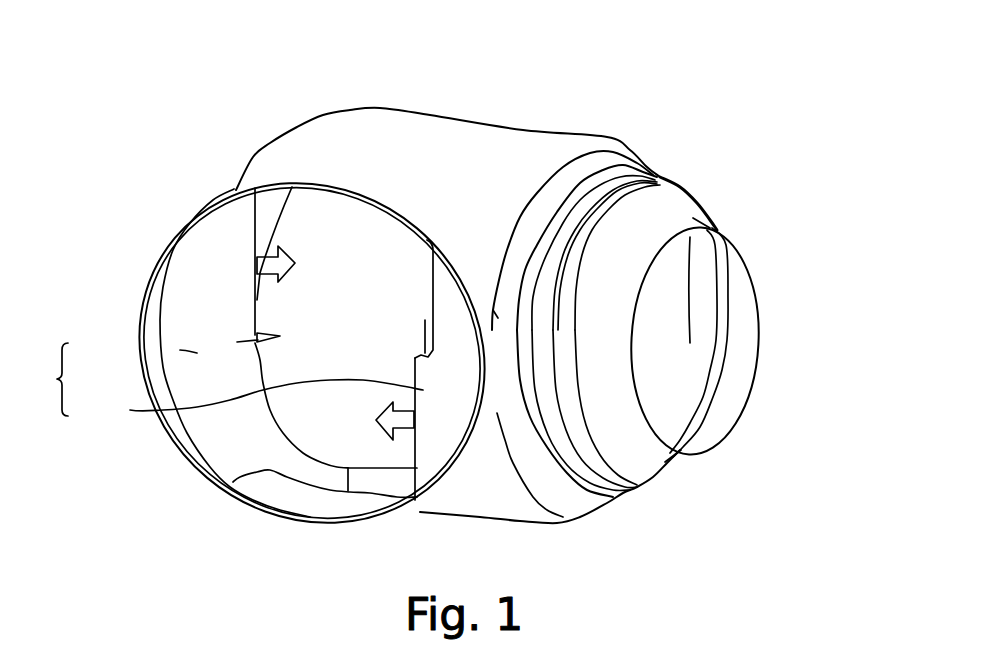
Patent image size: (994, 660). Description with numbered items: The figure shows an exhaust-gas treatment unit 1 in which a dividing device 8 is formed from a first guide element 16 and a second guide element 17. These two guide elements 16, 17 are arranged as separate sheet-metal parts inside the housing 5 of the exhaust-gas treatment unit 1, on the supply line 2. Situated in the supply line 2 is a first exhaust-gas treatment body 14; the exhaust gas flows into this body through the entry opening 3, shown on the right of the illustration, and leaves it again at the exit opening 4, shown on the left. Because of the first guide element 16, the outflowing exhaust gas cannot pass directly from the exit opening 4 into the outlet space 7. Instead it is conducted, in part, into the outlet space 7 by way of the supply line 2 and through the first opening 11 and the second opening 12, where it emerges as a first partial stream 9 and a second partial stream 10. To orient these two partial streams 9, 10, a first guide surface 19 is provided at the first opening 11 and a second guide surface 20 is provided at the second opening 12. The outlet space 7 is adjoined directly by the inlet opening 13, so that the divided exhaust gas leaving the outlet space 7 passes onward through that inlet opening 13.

The exhaust-gas treatment unit 1 is at (608, 120).
The supply line 2 is at (333, 230).
The entry opening 3 is at (758, 300).
The exit opening 4 is at (290, 222).
The housing 5 is at (533, 137).
The outlet space 7 is at (330, 480).
The dividing device 8 is at (57, 379).
The first partial stream 9 is at (273, 266).
The second partial stream 10 is at (420, 420).
The first opening 11 is at (263, 225).
The second opening 12 is at (417, 435).
The inlet opening 13 is at (190, 470).
The first exhaust-gas treatment body 14 is at (683, 383).
The first guide element 16 is at (180, 350).
The second guide element 17 is at (130, 410).
The first guide surface 19 is at (250, 330).
The second guide surface 20 is at (425, 320).